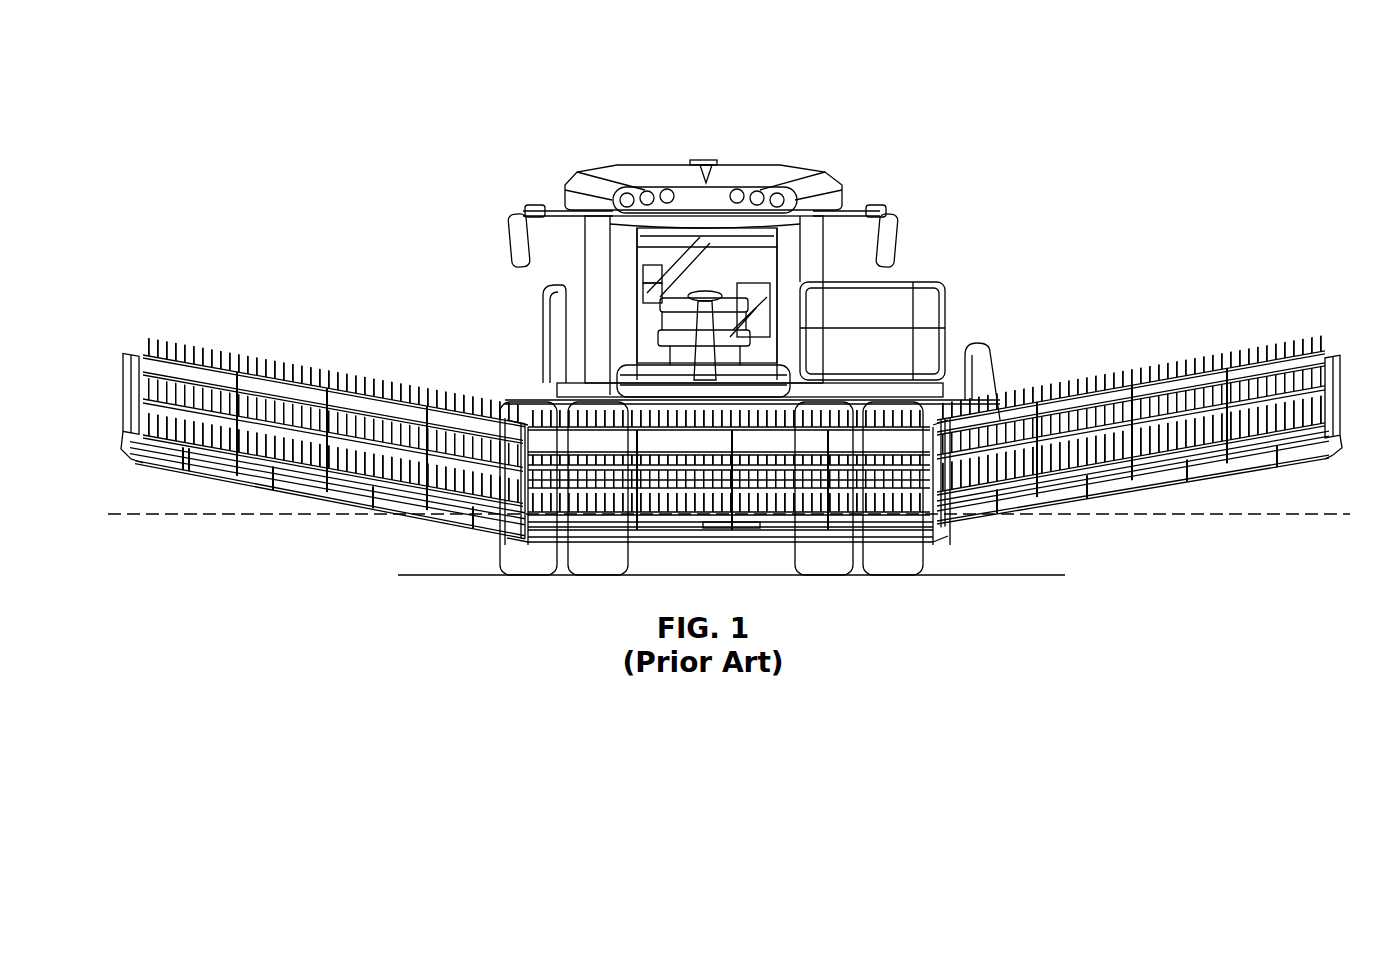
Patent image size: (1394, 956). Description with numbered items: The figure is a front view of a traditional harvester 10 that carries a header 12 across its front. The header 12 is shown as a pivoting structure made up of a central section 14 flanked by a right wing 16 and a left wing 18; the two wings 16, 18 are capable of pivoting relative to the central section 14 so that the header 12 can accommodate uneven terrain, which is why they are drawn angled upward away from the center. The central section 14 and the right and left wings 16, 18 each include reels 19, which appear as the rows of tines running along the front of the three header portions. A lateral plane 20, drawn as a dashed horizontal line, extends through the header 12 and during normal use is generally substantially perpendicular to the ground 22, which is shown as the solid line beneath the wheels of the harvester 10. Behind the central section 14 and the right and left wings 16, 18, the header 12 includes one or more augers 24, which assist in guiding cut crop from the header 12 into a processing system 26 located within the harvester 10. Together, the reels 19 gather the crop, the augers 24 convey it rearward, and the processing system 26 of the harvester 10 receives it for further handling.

The harvester 10 is at (1178, 70).
The header 12 is at (1030, 362).
The central section 14 is at (540, 386).
The right wing 16 is at (193, 312).
The left wing 18 is at (1324, 313).
The reels 19 is at (268, 360).
The lateral plane 20 is at (1301, 518).
The ground 22 is at (1018, 577).
The augers 24 is at (440, 440).
The processing system 26 is at (565, 320).